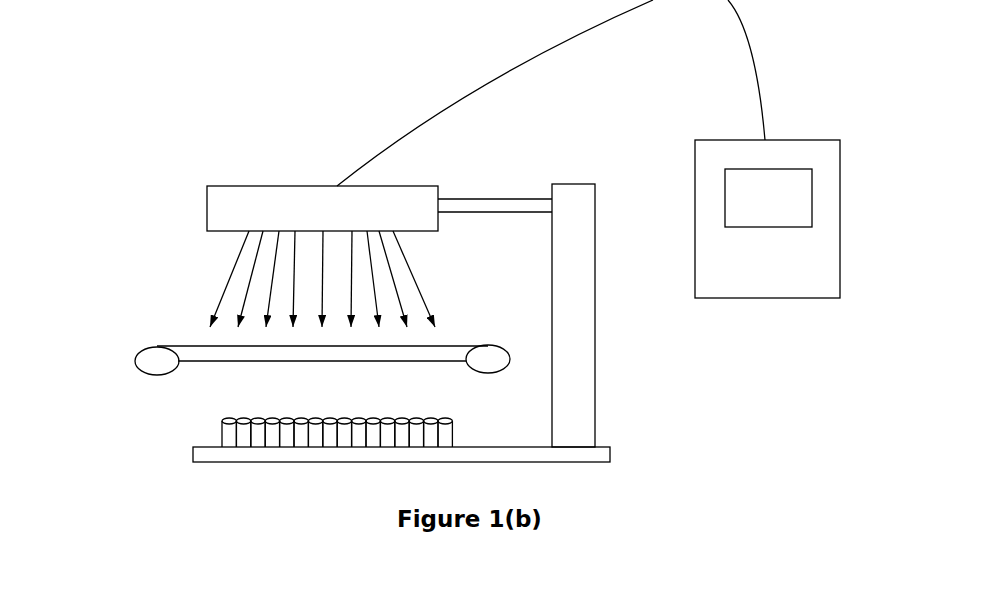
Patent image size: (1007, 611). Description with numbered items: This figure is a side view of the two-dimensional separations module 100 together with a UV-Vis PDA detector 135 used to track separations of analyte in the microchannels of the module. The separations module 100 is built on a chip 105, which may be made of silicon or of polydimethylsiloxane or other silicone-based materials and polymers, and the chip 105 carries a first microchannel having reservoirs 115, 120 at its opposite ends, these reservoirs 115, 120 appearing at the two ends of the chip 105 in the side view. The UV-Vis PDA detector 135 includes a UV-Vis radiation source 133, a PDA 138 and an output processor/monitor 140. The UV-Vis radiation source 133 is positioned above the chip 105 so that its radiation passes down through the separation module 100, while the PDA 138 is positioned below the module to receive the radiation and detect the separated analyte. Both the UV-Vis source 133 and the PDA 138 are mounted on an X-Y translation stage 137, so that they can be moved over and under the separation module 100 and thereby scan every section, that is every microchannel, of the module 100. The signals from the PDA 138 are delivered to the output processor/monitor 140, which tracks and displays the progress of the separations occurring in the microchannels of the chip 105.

The two-dimensional separations module 100 is at (135, 331).
The chip 105 is at (232, 363).
The reservoir 115 is at (163, 362).
The reservoir 120 is at (481, 360).
The UV-Vis radiation source 133 is at (192, 186).
The UV-Vis PDA detector 135 is at (726, 315).
The X-Y translation stage 137 is at (565, 170).
The PDA 138 is at (222, 431).
The output processor/monitor 140 is at (784, 300).